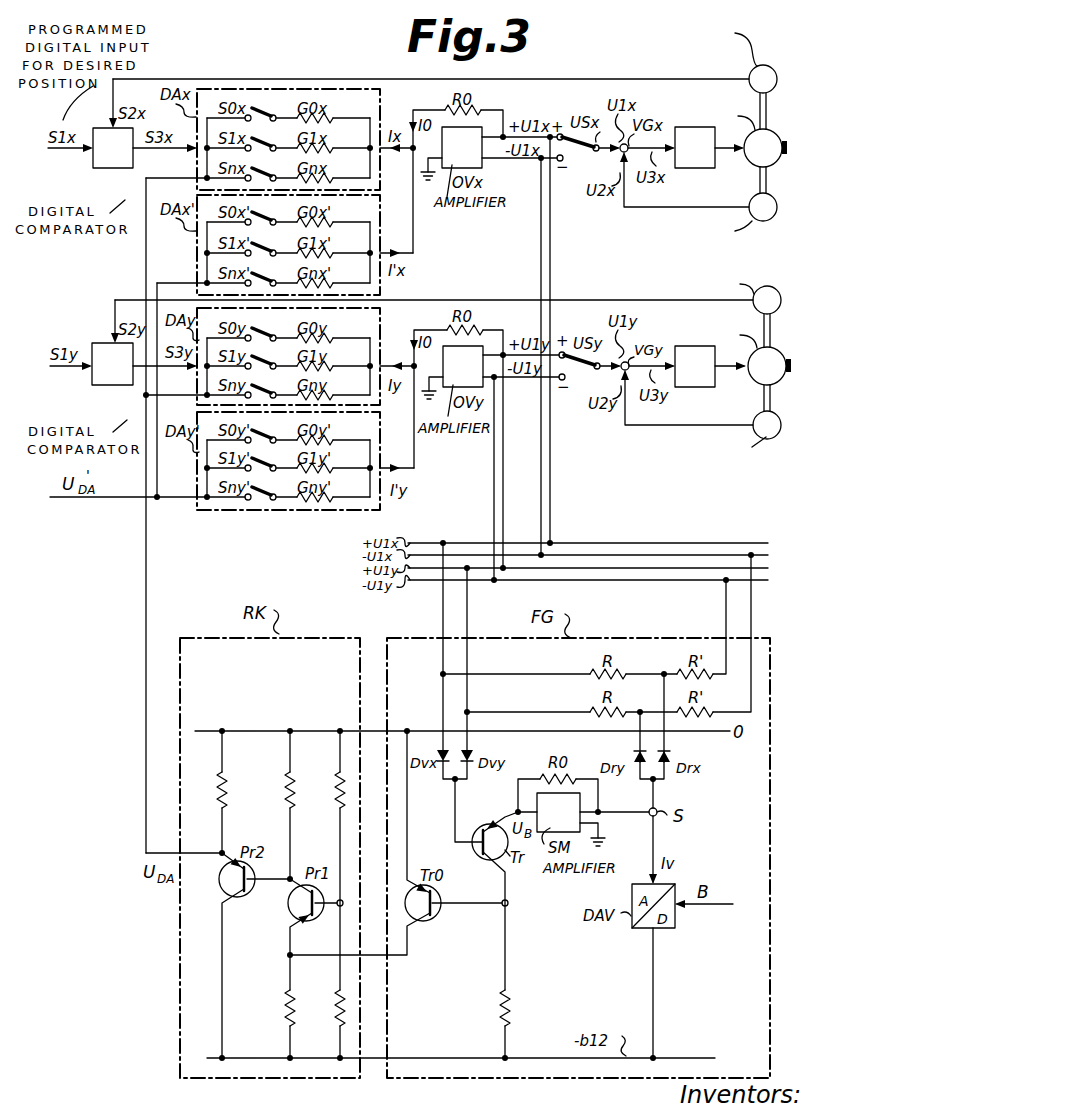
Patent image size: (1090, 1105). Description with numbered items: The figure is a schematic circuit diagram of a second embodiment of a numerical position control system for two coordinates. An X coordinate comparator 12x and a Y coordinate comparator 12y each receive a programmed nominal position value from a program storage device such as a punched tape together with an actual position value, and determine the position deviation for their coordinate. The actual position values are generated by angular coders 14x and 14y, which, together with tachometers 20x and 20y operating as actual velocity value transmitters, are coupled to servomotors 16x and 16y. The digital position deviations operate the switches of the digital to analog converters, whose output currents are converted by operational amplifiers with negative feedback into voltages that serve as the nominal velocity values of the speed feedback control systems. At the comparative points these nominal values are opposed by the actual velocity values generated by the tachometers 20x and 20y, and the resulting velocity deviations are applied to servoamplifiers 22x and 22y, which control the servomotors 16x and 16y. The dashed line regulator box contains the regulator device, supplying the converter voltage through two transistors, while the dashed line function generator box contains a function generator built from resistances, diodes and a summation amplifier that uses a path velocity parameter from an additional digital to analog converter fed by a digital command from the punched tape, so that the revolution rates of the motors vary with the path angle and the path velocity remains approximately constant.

The X coordinate comparator 12x is at (115, 163).
The Y coordinate comparator 12y is at (117, 378).
The angular coder 14x is at (765, 75).
The angular coder 14y is at (784, 292).
The servomotor 16x is at (770, 140).
The servomotor 16y is at (774, 358).
The tachometer 20x is at (768, 203).
The tachometer 20y is at (770, 432).
The servoamplifier 22x is at (693, 160).
The servoamplifier 22y is at (694, 380).